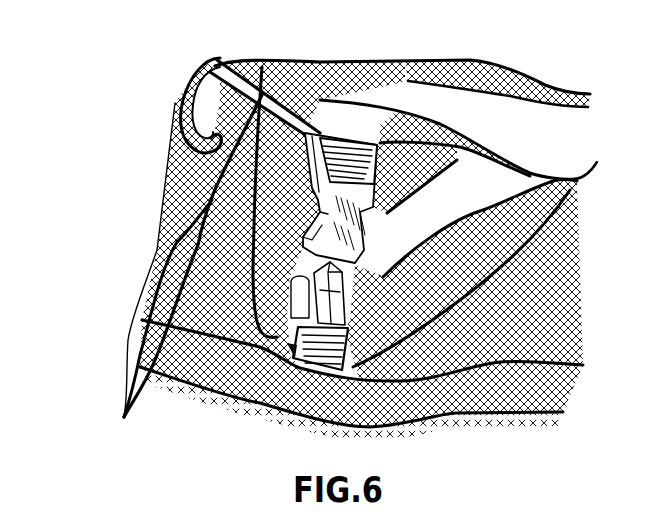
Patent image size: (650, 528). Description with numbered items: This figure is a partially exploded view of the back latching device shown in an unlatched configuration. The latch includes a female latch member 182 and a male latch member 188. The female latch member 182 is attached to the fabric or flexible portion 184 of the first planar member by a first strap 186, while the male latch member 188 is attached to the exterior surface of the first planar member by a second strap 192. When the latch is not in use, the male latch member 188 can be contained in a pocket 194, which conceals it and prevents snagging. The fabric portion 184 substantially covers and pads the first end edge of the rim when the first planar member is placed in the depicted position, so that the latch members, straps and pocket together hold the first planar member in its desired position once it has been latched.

The female latch member 182 is at (330, 212).
The fabric portion 184 is at (350, 61).
The first strap 186 is at (322, 135).
The male latch member 188 is at (318, 278).
The second strap 192 is at (305, 360).
The pocket 194 is at (183, 273).